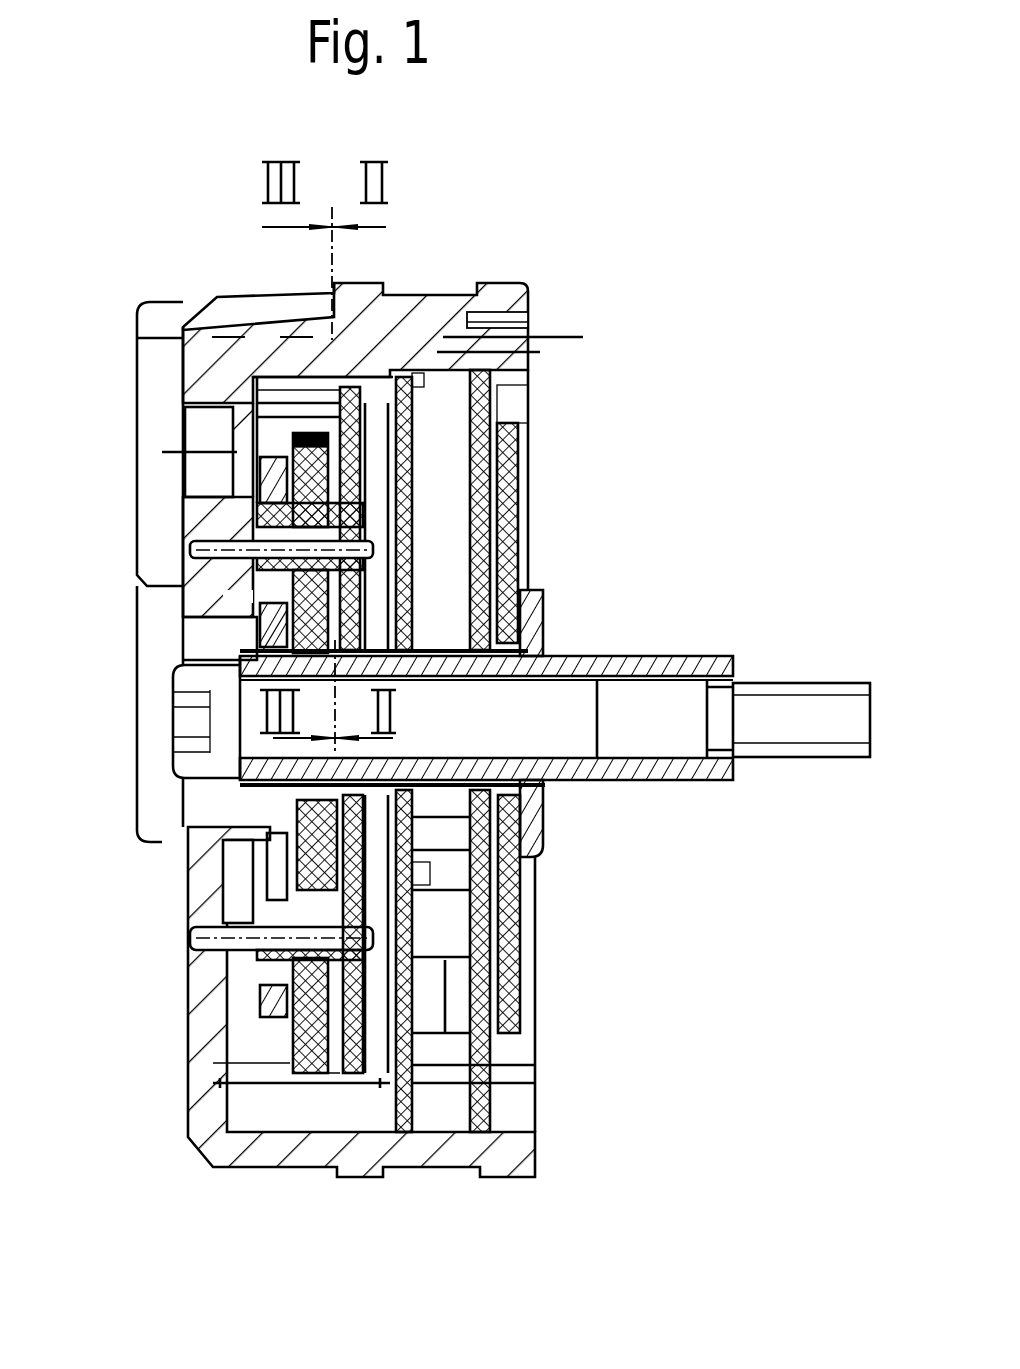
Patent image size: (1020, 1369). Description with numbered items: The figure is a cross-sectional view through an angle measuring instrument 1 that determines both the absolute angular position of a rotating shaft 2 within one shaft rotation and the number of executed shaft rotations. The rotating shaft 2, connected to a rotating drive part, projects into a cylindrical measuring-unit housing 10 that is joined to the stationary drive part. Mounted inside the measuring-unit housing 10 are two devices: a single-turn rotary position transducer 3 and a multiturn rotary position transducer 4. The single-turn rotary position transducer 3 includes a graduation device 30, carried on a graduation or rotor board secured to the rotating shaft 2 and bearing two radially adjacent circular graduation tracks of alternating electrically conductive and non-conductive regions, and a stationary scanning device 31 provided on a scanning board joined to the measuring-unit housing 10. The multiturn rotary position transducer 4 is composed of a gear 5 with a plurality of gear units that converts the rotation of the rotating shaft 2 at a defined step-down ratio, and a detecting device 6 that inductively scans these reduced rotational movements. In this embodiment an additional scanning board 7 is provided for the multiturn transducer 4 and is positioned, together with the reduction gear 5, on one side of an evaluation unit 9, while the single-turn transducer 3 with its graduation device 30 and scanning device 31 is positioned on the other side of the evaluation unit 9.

The angle measuring instrument 1 is at (133, 272).
The rotating shaft 2 is at (652, 700).
The single-turn rotary position transducer 3 is at (520, 383).
The multiturn rotary position transducer 4 is at (167, 1082).
The gear 5 is at (247, 873).
The detecting device 6 is at (327, 1088).
The additional scanning board 7 is at (233, 413).
The evaluation unit 9 is at (407, 1137).
The measuring-unit housing 10 is at (398, 306).
The graduation device 30 is at (500, 481).
The scanning device 31 is at (500, 407).